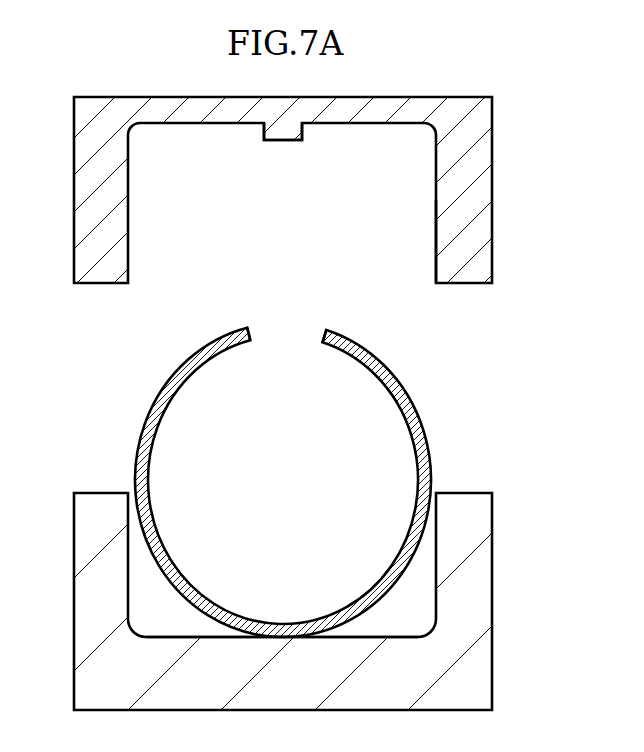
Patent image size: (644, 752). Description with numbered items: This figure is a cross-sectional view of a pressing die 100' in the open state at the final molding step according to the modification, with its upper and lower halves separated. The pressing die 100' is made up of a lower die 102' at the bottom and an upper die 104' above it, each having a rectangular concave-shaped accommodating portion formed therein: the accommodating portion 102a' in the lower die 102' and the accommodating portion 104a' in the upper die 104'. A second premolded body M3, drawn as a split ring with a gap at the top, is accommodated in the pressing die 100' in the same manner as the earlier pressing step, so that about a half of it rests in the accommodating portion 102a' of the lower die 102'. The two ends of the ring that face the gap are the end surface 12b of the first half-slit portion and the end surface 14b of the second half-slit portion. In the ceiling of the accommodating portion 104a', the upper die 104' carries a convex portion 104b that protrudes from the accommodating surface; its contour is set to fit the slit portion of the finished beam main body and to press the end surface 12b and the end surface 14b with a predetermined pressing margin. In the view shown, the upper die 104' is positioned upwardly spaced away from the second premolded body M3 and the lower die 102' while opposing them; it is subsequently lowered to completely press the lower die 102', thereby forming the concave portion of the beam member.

The pressing die 100' is at (322, 174).
The upper die 104' is at (322, 199).
The convex portion 104b is at (278, 128).
The accommodating portion 104a' is at (404, 251).
The second premolded body M3 is at (413, 380).
The end surface of the second half-slit portion 14b is at (250, 326).
The end surface of the first half-slit portion 12b is at (323, 330).
The lower die 102' is at (312, 601).
The accommodating portion 102a' is at (282, 588).